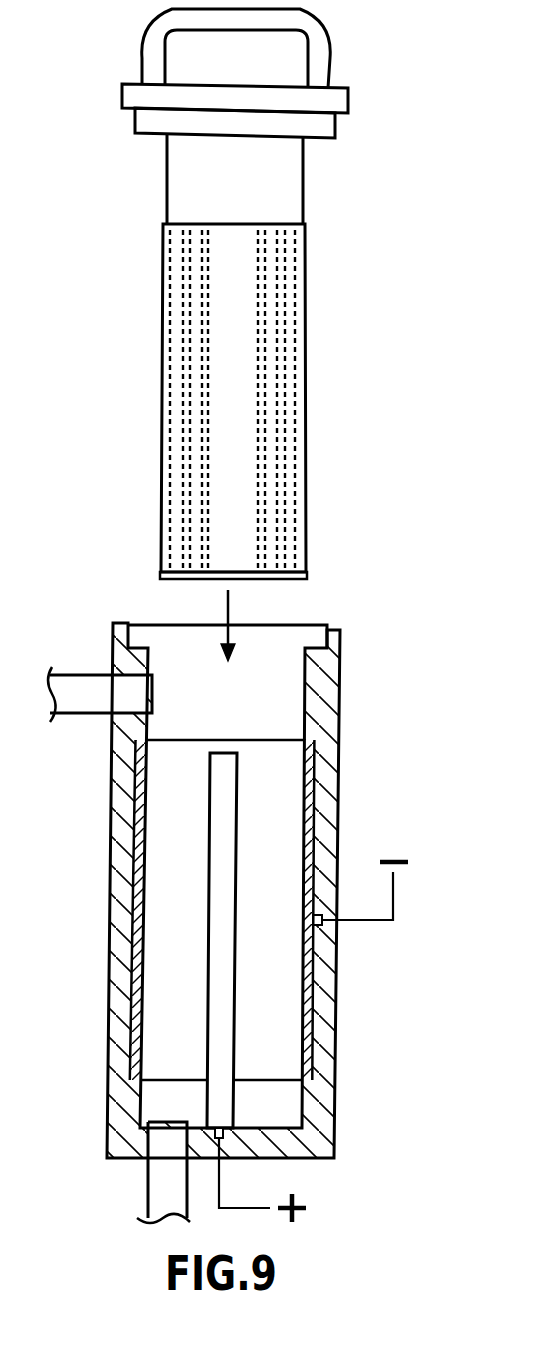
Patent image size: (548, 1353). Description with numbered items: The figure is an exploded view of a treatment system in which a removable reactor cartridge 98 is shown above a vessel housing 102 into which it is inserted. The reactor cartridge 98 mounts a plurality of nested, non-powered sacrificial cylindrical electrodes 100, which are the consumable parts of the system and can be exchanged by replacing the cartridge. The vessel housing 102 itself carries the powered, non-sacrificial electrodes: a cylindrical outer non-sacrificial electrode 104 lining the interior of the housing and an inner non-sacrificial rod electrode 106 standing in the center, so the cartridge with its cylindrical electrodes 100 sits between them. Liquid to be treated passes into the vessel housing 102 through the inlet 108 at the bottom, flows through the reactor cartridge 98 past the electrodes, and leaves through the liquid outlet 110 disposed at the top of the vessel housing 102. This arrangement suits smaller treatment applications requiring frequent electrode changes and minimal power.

The reactor cartridge 98 is at (117, 223).
The cylindrical electrodes 100 is at (180, 376).
The vessel housing 102 is at (338, 1004).
The outer non-sacrificial electrode 104 is at (304, 894).
The inner rod electrode 106 is at (209, 891).
The inlet 108 is at (148, 1190).
The liquid outlet 110 is at (75, 672).